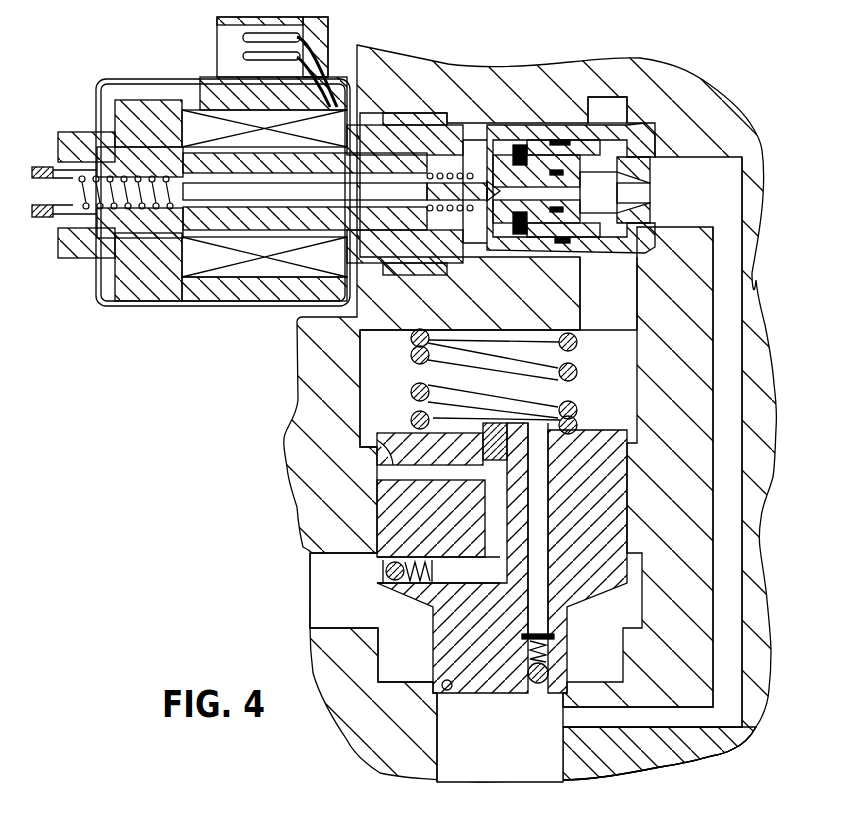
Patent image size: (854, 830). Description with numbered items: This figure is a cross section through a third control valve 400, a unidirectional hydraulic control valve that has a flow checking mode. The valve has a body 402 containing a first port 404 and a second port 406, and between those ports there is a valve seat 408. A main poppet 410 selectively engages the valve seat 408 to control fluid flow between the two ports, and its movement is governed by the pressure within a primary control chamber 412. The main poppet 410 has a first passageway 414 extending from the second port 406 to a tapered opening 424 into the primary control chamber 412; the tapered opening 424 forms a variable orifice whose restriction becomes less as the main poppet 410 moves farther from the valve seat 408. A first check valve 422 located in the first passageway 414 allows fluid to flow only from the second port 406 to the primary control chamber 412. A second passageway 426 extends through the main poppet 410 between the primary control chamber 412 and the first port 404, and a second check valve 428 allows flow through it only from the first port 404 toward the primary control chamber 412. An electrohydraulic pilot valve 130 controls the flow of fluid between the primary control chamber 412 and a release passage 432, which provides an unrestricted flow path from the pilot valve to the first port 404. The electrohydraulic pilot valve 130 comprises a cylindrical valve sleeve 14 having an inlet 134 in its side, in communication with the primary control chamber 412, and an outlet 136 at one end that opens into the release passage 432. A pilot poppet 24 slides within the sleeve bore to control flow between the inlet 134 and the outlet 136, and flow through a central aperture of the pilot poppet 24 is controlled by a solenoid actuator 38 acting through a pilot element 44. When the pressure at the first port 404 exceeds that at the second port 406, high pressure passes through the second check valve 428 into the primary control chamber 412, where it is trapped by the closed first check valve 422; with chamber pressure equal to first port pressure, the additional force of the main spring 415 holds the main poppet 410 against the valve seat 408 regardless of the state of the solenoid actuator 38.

The valve sleeve 14 is at (563, 133).
The pilot poppet 24 is at (540, 155).
The solenoid actuator 38 is at (264, 262).
The pilot element 44 is at (417, 193).
The electrohydraulic pilot valve 130 is at (148, 78).
The inlet 134 is at (590, 250).
The outlet 136 is at (647, 227).
The third control valve 400 is at (274, 547).
The body 402 is at (320, 342).
The first port 404 is at (452, 772).
The second port 406 is at (345, 622).
The valve seat 408 is at (445, 686).
The main poppet 410 is at (428, 574).
The primary control chamber 412 is at (370, 389).
The first passageway 414 is at (452, 582).
The main spring 415 is at (575, 375).
The first check valve 422 is at (403, 587).
The tapered opening 424 is at (372, 437).
The second passageway 426 is at (543, 600).
The second check valve 428 is at (542, 680).
The release passage 432 is at (697, 220).